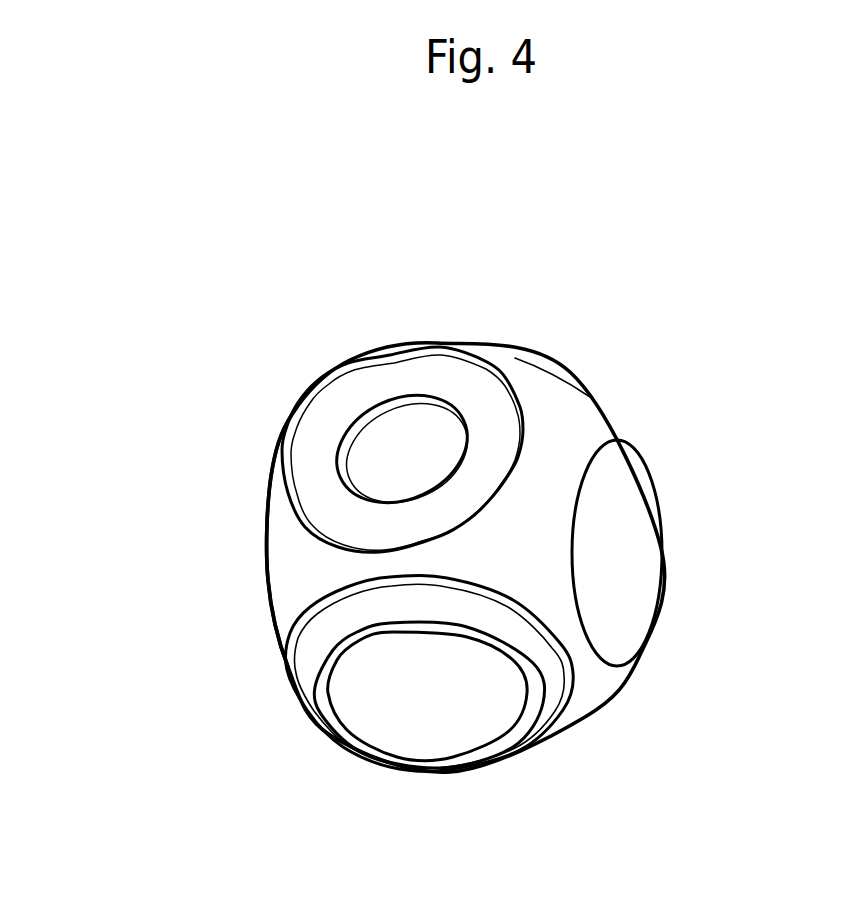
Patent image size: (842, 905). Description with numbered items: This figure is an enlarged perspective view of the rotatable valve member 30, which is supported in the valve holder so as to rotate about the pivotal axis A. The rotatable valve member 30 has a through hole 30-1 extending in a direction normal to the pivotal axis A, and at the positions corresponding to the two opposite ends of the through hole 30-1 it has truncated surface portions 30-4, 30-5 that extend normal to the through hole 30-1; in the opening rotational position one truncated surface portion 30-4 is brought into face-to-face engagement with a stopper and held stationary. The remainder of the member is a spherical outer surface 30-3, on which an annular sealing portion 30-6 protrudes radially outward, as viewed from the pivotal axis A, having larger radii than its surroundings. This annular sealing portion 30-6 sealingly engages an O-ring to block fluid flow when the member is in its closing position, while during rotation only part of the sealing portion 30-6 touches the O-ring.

The rotatable valve member 30 is at (533, 328).
The pivotal axis A is at (388, 458).
The through hole 30-1 is at (640, 558).
The spherical outer surface 30-3 is at (297, 560).
The truncated surface portion 30-4 is at (268, 603).
The truncated surface portion 30-5 is at (648, 467).
The annular sealing portion 30-6 is at (555, 713).